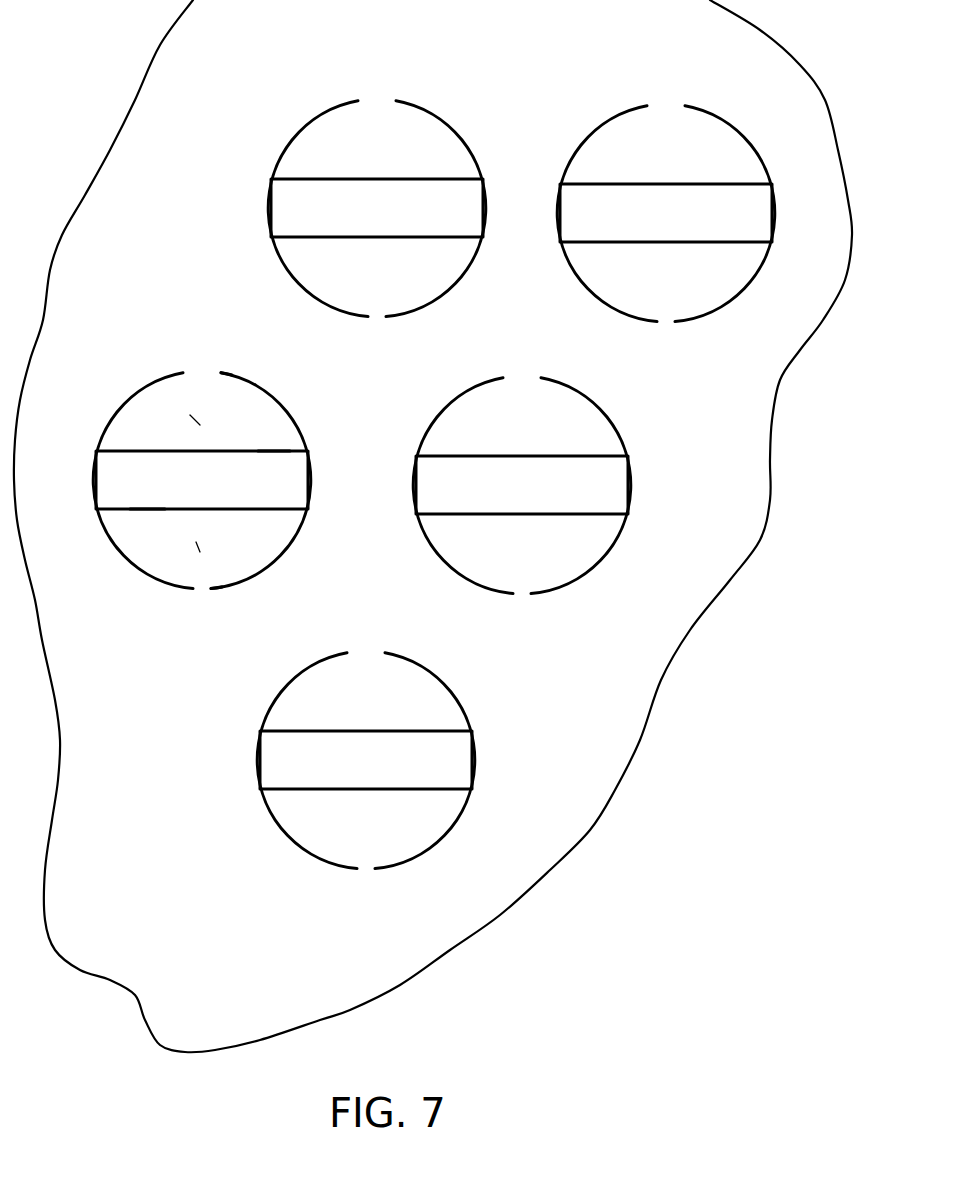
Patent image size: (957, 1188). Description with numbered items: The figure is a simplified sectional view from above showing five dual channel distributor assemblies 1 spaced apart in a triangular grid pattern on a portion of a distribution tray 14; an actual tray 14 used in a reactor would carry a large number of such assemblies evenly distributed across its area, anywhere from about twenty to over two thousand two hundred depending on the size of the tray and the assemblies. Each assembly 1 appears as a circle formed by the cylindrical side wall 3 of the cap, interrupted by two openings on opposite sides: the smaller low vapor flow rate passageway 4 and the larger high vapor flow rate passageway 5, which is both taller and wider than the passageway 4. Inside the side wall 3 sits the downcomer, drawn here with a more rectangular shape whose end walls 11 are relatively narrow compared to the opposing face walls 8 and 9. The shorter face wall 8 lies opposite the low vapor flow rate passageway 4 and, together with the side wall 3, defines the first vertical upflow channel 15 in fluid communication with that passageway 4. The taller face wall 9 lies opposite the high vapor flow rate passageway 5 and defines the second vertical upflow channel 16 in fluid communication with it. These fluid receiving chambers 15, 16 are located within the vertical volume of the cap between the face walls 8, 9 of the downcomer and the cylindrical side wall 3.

The dual channel distributor assembly 1 is at (550, 267).
The cylindrical side wall 3 is at (262, 383).
The low vapor flow rate passageway 4 is at (197, 592).
The high vapor flow rate passageway 5 is at (207, 370).
The shorter face wall 8 is at (148, 510).
The taller face wall 9 is at (267, 452).
The end wall 11 is at (95, 483).
The tray 14 is at (630, 670).
The first vertical upflow channel 15 is at (198, 547).
The second vertical upflow channel 16 is at (195, 420).